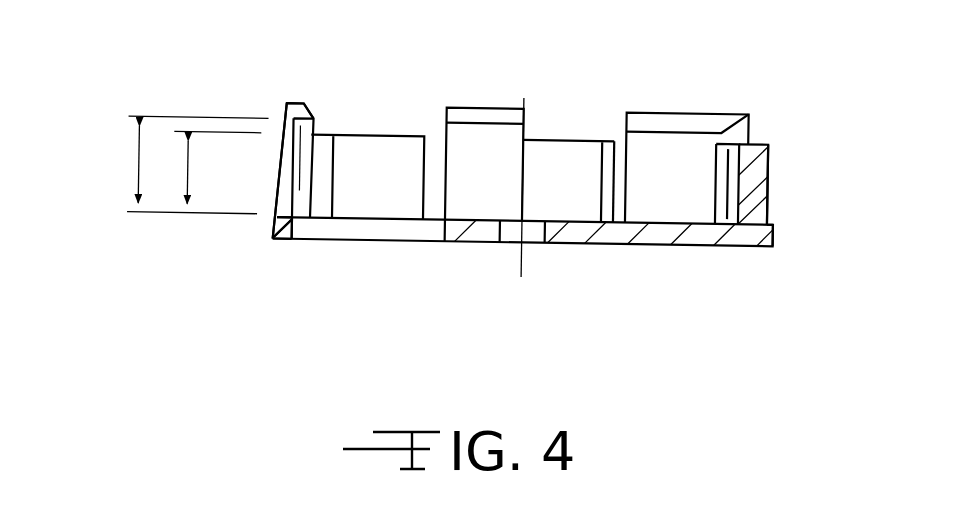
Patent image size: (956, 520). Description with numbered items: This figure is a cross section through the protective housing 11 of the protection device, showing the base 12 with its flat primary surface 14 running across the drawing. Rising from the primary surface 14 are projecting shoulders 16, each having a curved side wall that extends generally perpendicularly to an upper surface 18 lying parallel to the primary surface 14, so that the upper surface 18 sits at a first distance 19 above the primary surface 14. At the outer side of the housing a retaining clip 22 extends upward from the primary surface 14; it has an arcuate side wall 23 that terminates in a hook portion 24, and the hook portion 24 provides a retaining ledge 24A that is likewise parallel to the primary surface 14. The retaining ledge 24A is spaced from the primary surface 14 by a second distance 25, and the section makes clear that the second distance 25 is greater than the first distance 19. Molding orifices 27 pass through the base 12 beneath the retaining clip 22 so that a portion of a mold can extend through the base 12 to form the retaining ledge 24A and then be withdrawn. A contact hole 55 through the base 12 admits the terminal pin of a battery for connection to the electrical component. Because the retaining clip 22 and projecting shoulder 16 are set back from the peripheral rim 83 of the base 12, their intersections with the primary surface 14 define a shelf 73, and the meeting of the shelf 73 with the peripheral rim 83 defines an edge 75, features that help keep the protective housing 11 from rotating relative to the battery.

The protective housing 11 is at (678, 263).
The base 12 is at (573, 238).
The primary surface 14 is at (378, 209).
The projecting shoulder 16 is at (404, 174).
The upper surface 18 is at (362, 133).
The first distance 19 is at (185, 172).
The retaining clip 22 is at (280, 155).
The arcuate side wall 23 is at (455, 130).
The hook portion 24 is at (312, 113).
The retaining ledge 24A is at (307, 121).
The second distance 25 is at (134, 169).
The molding orifice 27 is at (290, 224).
The contact hole 55 is at (500, 240).
The shelf 73 is at (280, 205).
The edge 75 is at (268, 220).
The peripheral rim 83 is at (270, 232).